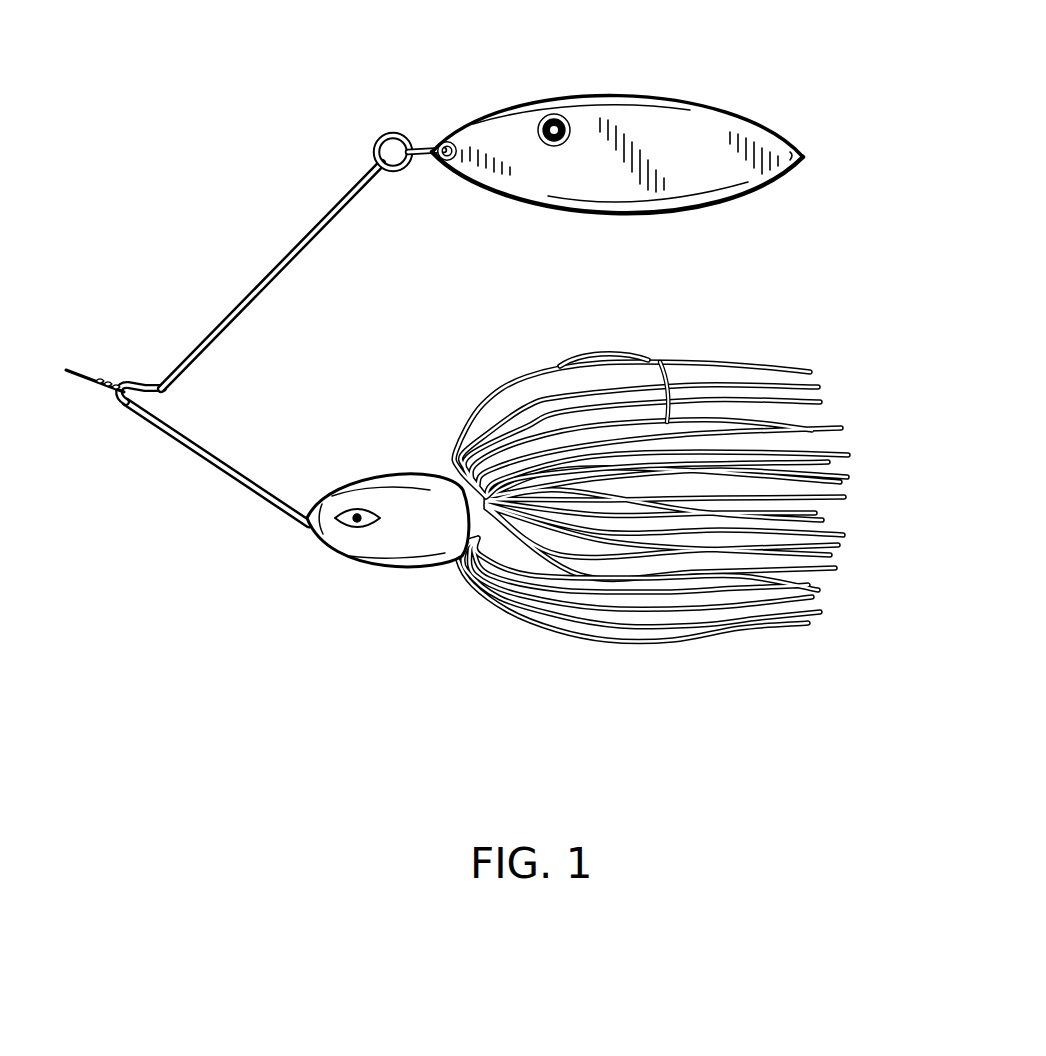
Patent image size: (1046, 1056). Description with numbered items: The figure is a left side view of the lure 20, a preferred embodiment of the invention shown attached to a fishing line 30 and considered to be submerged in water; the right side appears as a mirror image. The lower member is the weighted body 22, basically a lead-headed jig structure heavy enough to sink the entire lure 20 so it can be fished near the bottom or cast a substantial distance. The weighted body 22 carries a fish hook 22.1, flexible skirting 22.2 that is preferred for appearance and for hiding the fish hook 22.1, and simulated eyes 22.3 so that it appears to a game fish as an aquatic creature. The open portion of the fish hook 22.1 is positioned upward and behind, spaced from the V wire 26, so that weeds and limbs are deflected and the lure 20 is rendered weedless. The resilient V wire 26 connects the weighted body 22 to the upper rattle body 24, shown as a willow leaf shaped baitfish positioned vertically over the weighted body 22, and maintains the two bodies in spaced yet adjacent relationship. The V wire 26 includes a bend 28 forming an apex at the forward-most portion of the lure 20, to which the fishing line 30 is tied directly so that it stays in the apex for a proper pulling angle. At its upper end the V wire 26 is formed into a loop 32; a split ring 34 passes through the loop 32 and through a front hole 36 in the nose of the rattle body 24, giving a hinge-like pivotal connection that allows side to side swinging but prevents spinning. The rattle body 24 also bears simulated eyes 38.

The lure 20 is at (258, 207).
The weighted body 22 is at (385, 568).
The fish hook 22.1 is at (610, 355).
The flexible skirting 22.2 is at (785, 627).
The simulated eyes 22.3 is at (355, 506).
The upper rattle body 24 is at (745, 118).
The V wire 26 is at (210, 468).
The bend 28 is at (133, 377).
The fishing line 30 is at (74, 380).
The loop 32 is at (384, 131).
The split ring 34 is at (430, 143).
The front hole 36 is at (443, 160).
The simulated eyes 38 is at (556, 113).